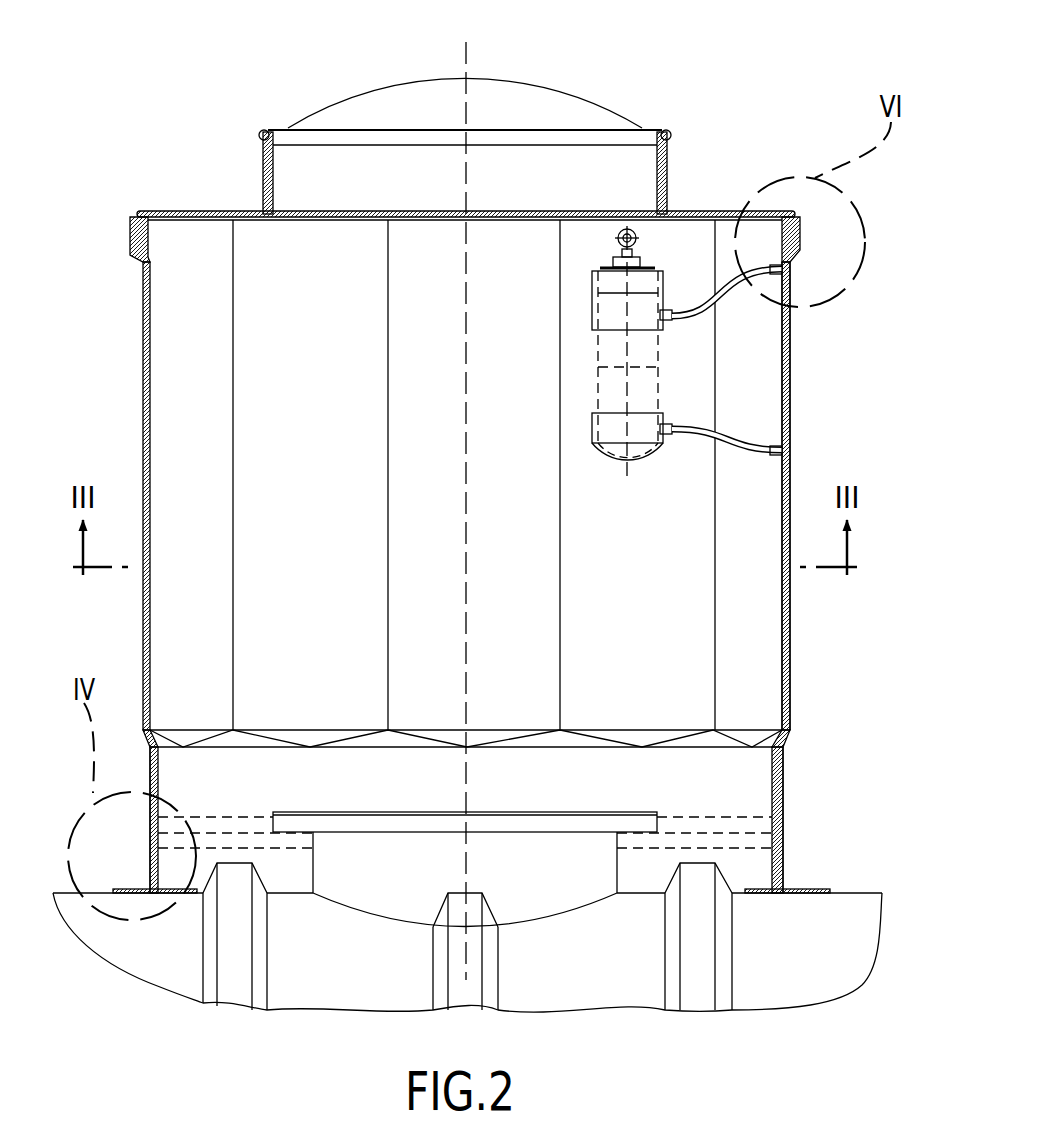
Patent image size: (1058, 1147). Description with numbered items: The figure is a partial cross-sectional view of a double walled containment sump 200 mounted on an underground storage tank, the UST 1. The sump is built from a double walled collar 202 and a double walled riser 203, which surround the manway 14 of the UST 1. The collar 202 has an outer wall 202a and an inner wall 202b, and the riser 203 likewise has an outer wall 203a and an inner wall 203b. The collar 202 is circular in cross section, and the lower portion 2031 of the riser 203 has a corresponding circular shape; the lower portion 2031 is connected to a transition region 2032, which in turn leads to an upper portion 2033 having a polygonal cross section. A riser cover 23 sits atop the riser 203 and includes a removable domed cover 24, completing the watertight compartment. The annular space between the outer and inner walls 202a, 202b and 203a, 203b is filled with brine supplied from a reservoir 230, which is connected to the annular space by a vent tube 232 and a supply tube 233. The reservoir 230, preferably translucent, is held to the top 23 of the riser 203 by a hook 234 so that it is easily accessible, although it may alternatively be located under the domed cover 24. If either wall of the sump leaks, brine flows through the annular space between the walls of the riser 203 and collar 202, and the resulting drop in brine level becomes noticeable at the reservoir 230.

The double walled containment sump 200 is at (102, 240).
The riser cover 23 is at (218, 211).
The domed cover 24 is at (565, 95).
The reservoir 230 is at (663, 262).
The vent tube 232 is at (778, 265).
The supply tube 233 is at (677, 413).
The hook 234 is at (627, 226).
The double walled riser 203 is at (793, 467).
The outer wall 203a is at (790, 650).
The inner wall 203b is at (782, 660).
The upper portion 2033 is at (270, 454).
The transition region 2032 is at (307, 740).
The lower portion 2031 is at (380, 795).
The double walled collar 202 is at (803, 815).
The outer wall 202a is at (783, 845).
The inner wall 202b is at (775, 862).
The manway 14 is at (350, 889).
The UST 1 is at (590, 973).